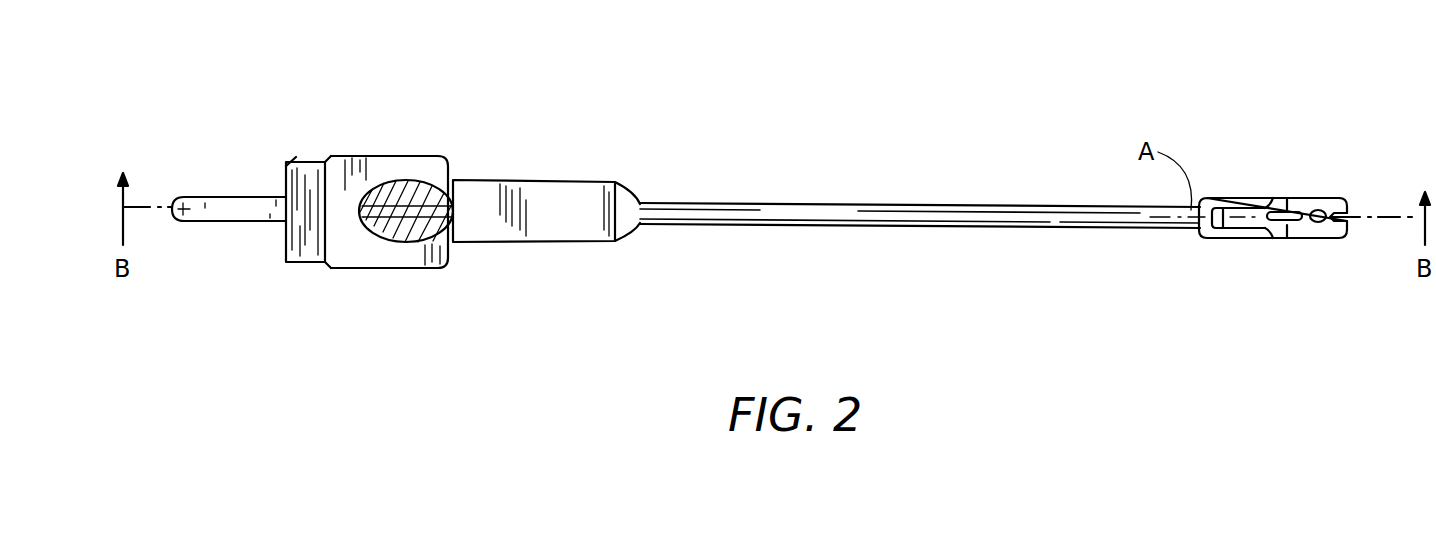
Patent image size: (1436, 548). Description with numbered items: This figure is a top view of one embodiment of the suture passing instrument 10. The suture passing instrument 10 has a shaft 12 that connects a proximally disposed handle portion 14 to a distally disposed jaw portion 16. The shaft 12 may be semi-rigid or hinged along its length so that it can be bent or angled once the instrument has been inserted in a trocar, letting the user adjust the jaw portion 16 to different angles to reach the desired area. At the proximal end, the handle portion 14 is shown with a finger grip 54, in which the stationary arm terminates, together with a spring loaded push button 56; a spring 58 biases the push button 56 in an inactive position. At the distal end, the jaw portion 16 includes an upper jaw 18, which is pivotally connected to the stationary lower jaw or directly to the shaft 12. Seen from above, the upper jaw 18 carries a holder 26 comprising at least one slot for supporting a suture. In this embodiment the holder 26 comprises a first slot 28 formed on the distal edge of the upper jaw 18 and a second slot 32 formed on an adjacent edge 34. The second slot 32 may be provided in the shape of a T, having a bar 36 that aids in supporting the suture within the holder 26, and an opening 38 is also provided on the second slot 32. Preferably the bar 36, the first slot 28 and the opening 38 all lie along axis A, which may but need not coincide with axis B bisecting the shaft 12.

The suture passing instrument 10 is at (622, 293).
The shaft 12 is at (877, 205).
The handle portion 14 is at (384, 124).
The jaw portion 16 is at (1273, 200).
The upper jaw 18 is at (1222, 232).
The holder 26 is at (1310, 188).
The first slot 28 is at (1340, 228).
The second slot 32 is at (1287, 198).
The adjacent edge 34 is at (1258, 196).
The bar 36 is at (1290, 225).
The opening 38 is at (1320, 225).
The finger grip 54 is at (247, 200).
The push button 56 is at (358, 258).
The spring 58 is at (430, 205).